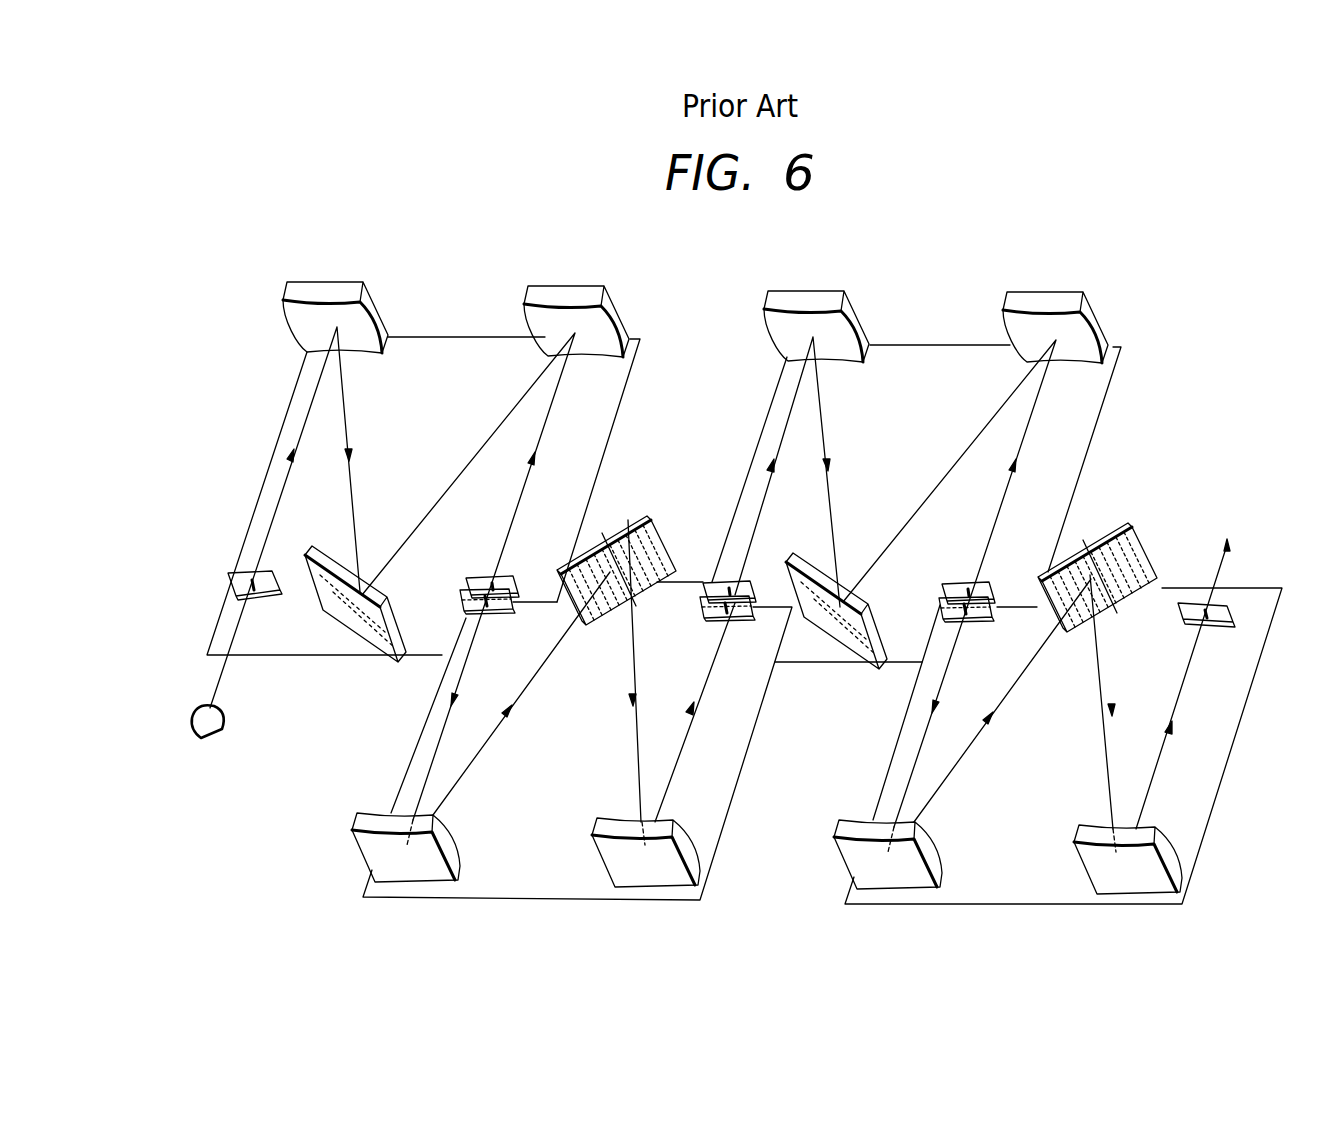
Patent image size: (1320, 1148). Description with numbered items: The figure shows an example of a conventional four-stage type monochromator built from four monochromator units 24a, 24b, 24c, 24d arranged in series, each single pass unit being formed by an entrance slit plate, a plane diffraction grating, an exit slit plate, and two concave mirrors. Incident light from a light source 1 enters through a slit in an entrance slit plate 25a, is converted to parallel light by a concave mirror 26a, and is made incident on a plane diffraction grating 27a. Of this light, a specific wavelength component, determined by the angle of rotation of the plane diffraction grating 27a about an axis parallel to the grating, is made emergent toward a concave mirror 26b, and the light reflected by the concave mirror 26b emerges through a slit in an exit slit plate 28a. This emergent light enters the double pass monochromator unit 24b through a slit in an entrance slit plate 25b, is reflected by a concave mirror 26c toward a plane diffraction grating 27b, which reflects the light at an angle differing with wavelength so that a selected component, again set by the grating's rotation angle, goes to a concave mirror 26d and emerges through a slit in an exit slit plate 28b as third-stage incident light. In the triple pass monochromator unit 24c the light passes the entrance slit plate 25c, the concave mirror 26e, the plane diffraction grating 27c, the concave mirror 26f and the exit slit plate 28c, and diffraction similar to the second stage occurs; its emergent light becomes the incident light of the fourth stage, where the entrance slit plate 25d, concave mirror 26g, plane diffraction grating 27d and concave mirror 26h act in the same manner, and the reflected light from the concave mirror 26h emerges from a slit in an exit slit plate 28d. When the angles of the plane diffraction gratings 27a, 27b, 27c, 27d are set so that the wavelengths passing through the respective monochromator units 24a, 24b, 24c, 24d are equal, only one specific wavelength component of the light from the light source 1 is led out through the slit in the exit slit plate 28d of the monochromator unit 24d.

The light source 1 is at (218, 731).
The monochromator unit 24a is at (287, 412).
The monochromator unit 24b is at (412, 738).
The monochromator unit 24c is at (1100, 432).
The monochromator unit 24d is at (1240, 735).
The entrance slit plate 25a is at (228, 578).
The entrance slit plate 25b is at (462, 599).
The entrance slit plate 25c is at (722, 583).
The entrance slit plate 25d is at (942, 607).
The concave mirror 26a is at (330, 282).
The concave mirror 26b is at (568, 289).
The concave mirror 26c is at (357, 820).
The concave mirror 26d is at (598, 824).
The concave mirror 26e is at (803, 292).
The concave mirror 26f is at (1043, 295).
The concave mirror 26g is at (838, 826).
The concave mirror 26h is at (1078, 832).
The plane diffraction grating 27a is at (352, 630).
The plane diffraction grating 27b is at (640, 514).
The plane diffraction grating 27c is at (840, 642).
The plane diffraction grating 27d is at (1122, 527).
The exit slit plate 28a is at (508, 577).
The exit slit plate 28b is at (740, 621).
The exit slit plate 28c is at (986, 584).
The exit slit plate 28d is at (1218, 627).